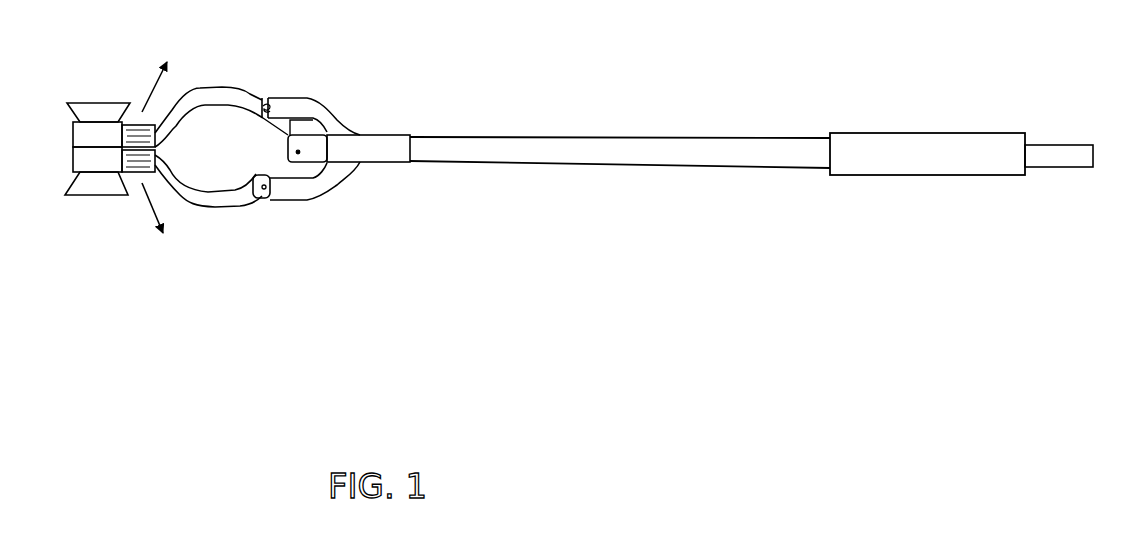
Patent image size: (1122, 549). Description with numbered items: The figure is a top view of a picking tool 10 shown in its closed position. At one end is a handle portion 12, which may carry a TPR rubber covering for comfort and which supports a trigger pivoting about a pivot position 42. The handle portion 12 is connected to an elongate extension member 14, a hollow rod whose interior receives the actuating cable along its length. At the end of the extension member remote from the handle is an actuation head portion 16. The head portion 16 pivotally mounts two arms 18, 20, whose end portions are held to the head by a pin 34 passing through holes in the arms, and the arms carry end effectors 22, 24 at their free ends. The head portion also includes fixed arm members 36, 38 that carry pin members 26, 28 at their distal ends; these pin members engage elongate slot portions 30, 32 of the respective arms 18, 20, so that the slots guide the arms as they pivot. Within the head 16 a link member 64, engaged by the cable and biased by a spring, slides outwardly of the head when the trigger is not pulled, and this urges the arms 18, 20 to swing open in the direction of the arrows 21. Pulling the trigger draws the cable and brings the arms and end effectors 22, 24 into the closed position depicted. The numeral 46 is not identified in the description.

The picking tool 10 is at (615, 275).
The handle portion 12 is at (1068, 157).
The elongate extension member 14 is at (678, 152).
The actuation head portion 16 is at (373, 143).
The arm 18 is at (225, 98).
The arm 20 is at (222, 200).
The arrows 21 is at (141, 112).
The end effector 22 is at (108, 122).
The end effector 24 is at (102, 197).
The pin member 26 is at (268, 97).
The pin member 28 is at (268, 200).
The elongate slot portion 30 is at (262, 117).
The elongate slot portion 32 is at (262, 172).
The pin 34 is at (299, 151).
The fixed arm member 36 is at (318, 108).
The fixed arm member 38 is at (315, 188).
The pivot position 42 is at (78, 162).
The upper housing block 46 is at (87, 137).
The link member 64 is at (313, 160).